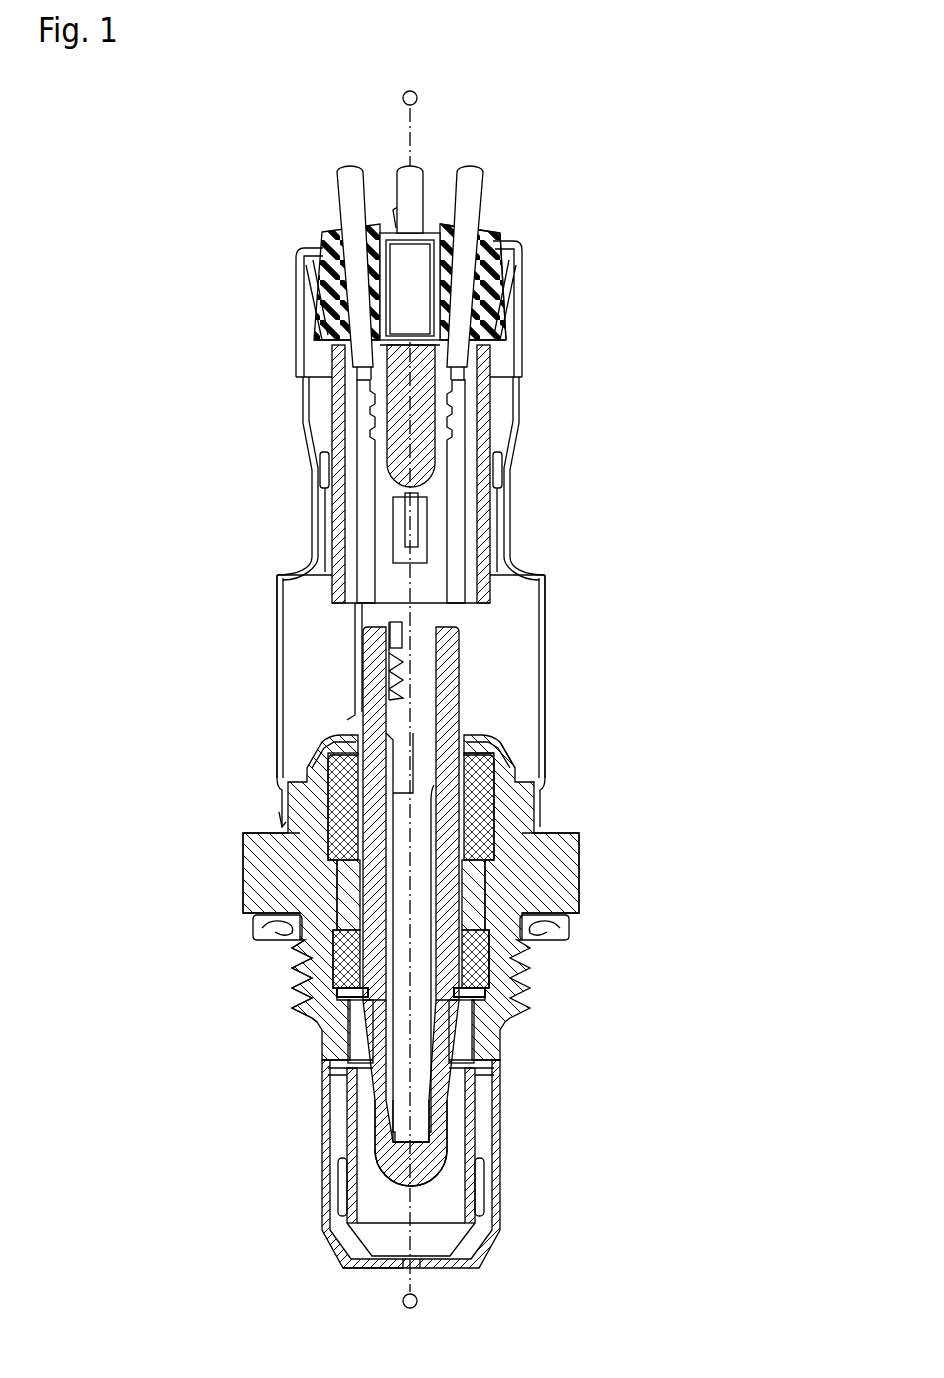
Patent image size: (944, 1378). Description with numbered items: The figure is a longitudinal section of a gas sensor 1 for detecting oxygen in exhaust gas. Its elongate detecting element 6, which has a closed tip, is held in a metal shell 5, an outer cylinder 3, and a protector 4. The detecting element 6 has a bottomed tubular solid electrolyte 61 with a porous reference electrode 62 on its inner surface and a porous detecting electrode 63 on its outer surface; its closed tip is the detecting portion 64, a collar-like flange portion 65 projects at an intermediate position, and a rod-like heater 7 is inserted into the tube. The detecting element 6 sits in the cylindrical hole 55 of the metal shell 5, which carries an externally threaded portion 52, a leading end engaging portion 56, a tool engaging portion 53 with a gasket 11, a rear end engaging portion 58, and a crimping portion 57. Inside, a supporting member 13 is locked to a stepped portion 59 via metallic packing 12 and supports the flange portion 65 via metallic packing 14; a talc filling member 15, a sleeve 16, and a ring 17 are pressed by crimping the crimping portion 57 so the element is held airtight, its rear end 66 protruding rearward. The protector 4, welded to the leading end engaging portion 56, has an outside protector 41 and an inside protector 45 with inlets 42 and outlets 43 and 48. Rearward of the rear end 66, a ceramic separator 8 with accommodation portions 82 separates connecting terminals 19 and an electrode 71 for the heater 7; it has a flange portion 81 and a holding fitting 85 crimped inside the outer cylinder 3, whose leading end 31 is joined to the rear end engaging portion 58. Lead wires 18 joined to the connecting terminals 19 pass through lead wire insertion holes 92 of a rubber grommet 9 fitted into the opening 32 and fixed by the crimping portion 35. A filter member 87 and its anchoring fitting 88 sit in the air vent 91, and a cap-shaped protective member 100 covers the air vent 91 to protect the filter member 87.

The gas sensor 1 is at (621, 153).
The outer cylinder 3 is at (574, 509).
The protector 4 is at (580, 1090).
The metal shell 5 is at (601, 797).
The detecting element 6 is at (248, 1100).
The heater 7 is at (422, 1035).
The separator 8 is at (315, 606).
The grommet 9 is at (503, 214).
The gasket 11 is at (258, 932).
The metallic packing 12 is at (484, 996).
The supporting member 13 is at (488, 968).
The metallic packing 14 is at (478, 958).
The filling member 15 is at (474, 892).
The sleeve 16 is at (523, 767).
The ring 17 is at (468, 757).
The lead wire 18 is at (470, 190).
The connecting terminal 19 is at (413, 527).
The leading end 31 is at (280, 808).
The opening 32 is at (498, 230).
The crimping portion 35 is at (515, 273).
The outside protector 41 is at (505, 1118).
The inlet 42 is at (478, 1192).
The outlet 43 is at (403, 1268).
The inside protector 45 is at (474, 1140).
The outlet 48 is at (422, 1268).
The externally threaded portion 52 is at (310, 978).
The tool engaging portion 53 is at (263, 872).
The cylindrical hole 55 is at (360, 1037).
The leading end engaging portion 56 is at (337, 1058).
The crimping portion 57 is at (327, 747).
The rear end engaging portion 58 is at (300, 797).
The stepped portion 59 is at (340, 1000).
The solid electrolyte 61 is at (383, 1122).
The reference electrode 62 is at (393, 1128).
The detecting electrode 63 is at (377, 1152).
The detecting portion 64 is at (374, 1189).
The flange portion 65 is at (333, 940).
The rear end 66 is at (476, 669).
The electrode 71 is at (420, 553).
The flange portion 81 is at (338, 440).
The accommodation portion 82 is at (330, 561).
The holding fitting 85 is at (350, 556).
The filter member 87 is at (298, 266).
The anchoring fitting 88 is at (384, 303).
The air vent 91 is at (506, 318).
The lead wire insertion hole 92 is at (345, 320).
The protective member 100 is at (303, 229).